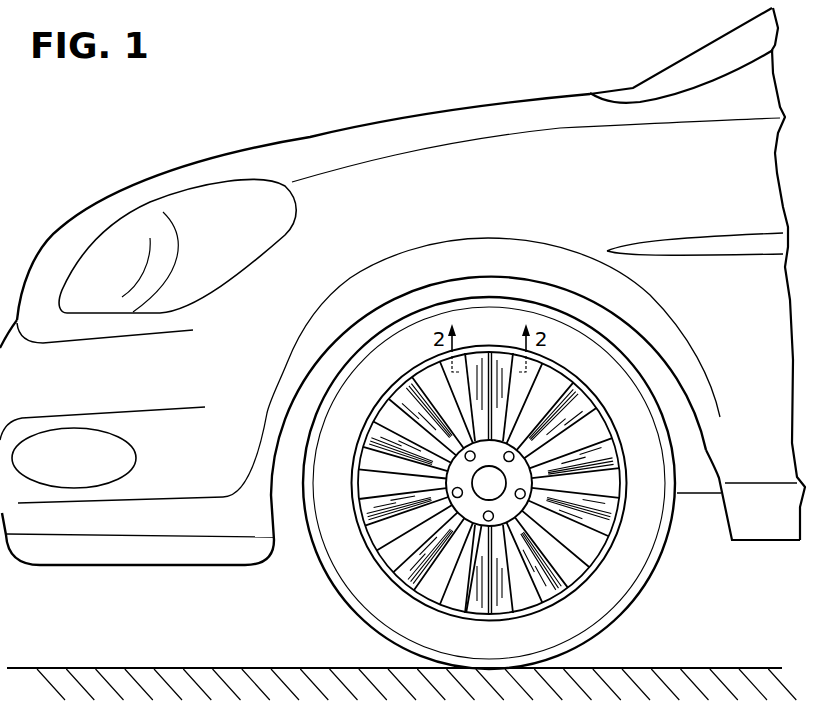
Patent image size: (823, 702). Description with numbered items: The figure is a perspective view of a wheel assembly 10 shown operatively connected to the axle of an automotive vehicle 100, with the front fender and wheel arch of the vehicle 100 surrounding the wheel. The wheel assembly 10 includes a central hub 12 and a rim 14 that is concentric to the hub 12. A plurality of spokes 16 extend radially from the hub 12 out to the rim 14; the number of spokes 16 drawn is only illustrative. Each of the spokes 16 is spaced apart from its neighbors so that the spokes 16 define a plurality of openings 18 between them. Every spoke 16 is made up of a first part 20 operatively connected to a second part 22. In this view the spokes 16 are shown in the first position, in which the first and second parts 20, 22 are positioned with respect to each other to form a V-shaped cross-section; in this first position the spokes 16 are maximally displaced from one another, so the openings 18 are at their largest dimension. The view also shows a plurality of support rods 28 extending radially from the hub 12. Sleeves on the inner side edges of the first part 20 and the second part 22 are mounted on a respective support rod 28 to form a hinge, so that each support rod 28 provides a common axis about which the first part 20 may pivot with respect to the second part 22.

The automotive vehicle 100 is at (491, 78).
The wheel assembly 10 is at (694, 588).
The hub 12 is at (388, 563).
The rim 14 is at (592, 420).
The spokes 16 is at (489, 326).
The openings 18 is at (455, 348).
The first part 20 is at (475, 350).
The second part 22 is at (501, 352).
The support rods 28 is at (490, 405).